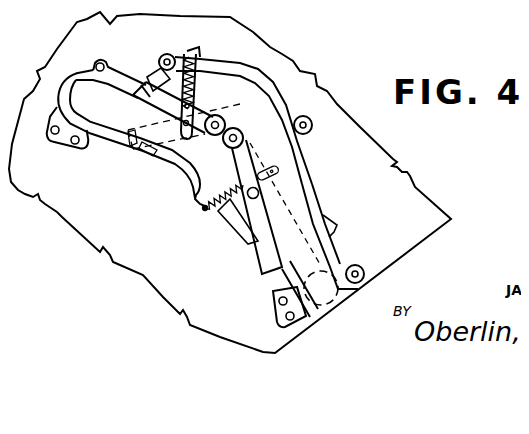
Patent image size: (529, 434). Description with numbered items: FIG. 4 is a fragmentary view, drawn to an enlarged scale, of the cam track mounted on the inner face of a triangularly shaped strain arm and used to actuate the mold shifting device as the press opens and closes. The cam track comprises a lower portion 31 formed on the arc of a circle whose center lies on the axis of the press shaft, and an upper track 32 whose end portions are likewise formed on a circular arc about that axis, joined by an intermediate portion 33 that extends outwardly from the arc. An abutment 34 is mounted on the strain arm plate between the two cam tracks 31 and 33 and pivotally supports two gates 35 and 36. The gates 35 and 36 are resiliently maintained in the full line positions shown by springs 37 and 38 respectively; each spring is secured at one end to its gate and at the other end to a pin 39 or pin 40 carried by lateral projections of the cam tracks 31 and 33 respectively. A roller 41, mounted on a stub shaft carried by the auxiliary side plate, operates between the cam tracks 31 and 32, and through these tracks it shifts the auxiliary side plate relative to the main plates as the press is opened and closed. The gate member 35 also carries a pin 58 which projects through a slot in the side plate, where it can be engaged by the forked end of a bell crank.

The lower portion of cam track 31 is at (190, 173).
The upper track 32 is at (343, 253).
The intermediate portion 33 is at (285, 94).
The abutment 34 is at (228, 130).
The gate 35 is at (263, 227).
The gate 36 is at (157, 95).
The spring 37 is at (222, 210).
The spring 38 is at (169, 55).
The pin 39 is at (206, 212).
The pin 40 is at (192, 47).
The roller 41 is at (313, 270).
The pin 58 is at (222, 204).